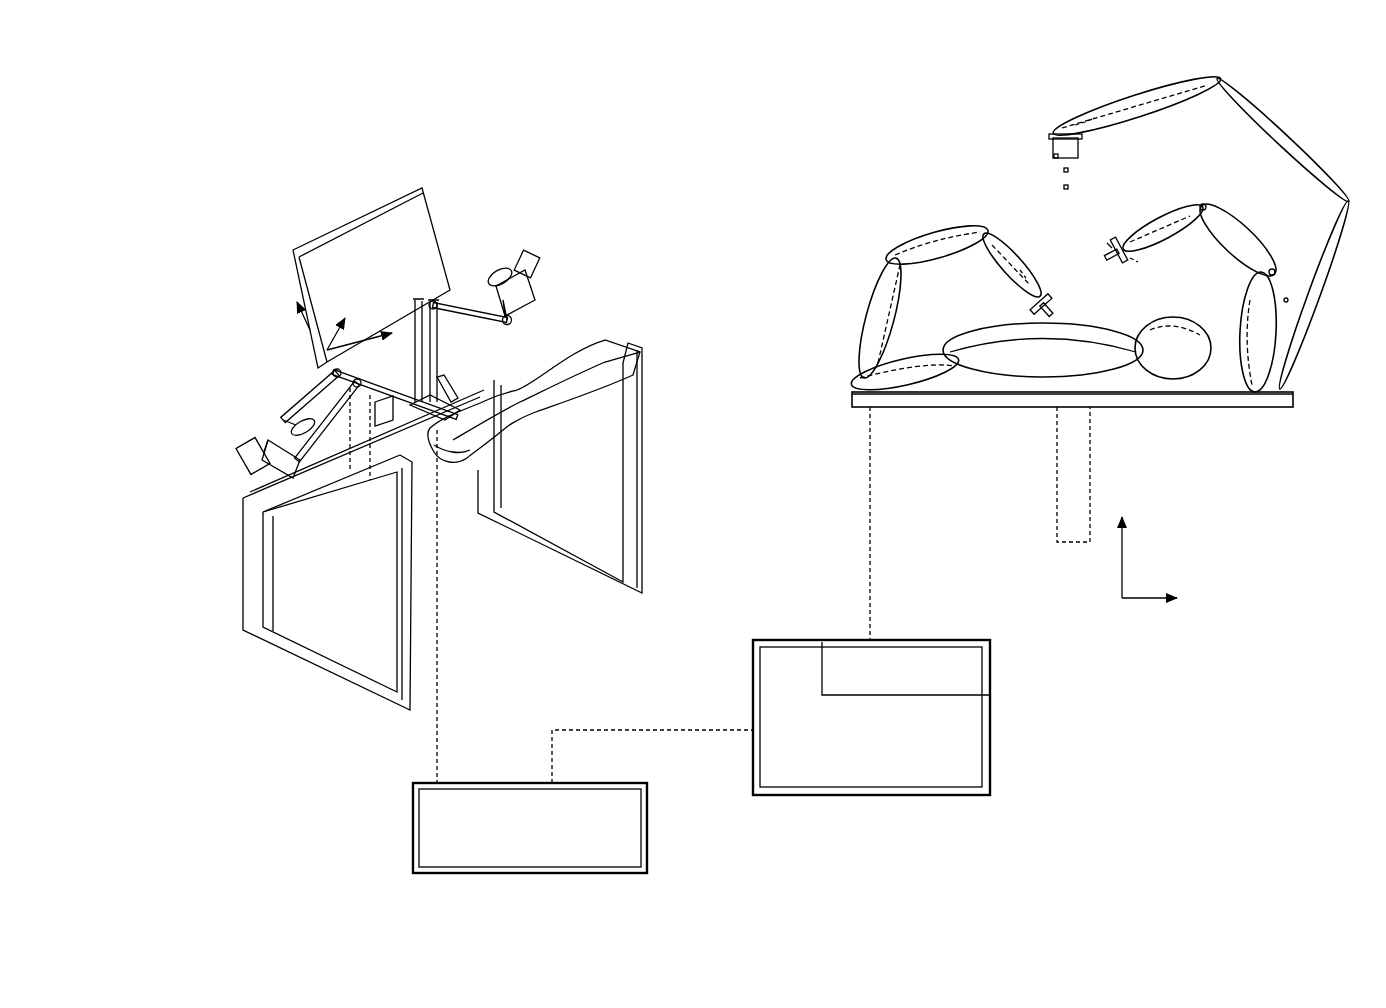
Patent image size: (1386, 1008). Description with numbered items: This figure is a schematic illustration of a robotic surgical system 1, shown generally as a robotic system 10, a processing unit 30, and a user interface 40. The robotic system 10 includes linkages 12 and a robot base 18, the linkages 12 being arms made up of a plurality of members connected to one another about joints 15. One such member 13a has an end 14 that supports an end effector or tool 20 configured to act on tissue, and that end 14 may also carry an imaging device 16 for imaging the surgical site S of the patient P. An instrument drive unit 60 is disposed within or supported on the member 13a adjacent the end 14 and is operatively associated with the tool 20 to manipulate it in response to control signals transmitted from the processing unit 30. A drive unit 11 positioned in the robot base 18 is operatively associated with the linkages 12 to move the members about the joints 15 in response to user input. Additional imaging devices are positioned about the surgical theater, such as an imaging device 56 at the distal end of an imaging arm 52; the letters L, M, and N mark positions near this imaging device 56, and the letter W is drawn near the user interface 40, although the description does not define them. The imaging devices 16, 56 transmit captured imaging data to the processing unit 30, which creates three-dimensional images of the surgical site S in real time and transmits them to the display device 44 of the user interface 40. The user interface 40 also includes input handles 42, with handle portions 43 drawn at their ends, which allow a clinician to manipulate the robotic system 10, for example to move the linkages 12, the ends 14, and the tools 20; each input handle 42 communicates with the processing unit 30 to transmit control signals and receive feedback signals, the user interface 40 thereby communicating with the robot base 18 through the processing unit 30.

The robotic surgical system 1 is at (641, 140).
The robotic system 10 is at (946, 118).
The drive unit 11 is at (962, 652).
The linkages 12 is at (901, 214).
The member 13a is at (1192, 210).
The end 14 is at (1136, 220).
The joints 15 is at (1253, 238).
The imaging device 16 is at (1117, 246).
The robot base 18 is at (881, 742).
The end effector or tool 20 is at (1107, 243).
The processing unit 30 is at (540, 838).
The user interface 40 is at (301, 180).
The input handles 42 is at (220, 560).
The input handles 43 is at (490, 285).
The display device 44 is at (433, 205).
The imaging arm 52 is at (1307, 138).
The imaging device 56 is at (1054, 152).
The instrument drive unit (IDU) 60 is at (1084, 120).
The point L is at (1054, 157).
The point M is at (1063, 170).
The point N is at (1063, 188).
The patient P is at (1088, 358).
The surgical site S is at (1090, 327).
The workspace W is at (536, 212).